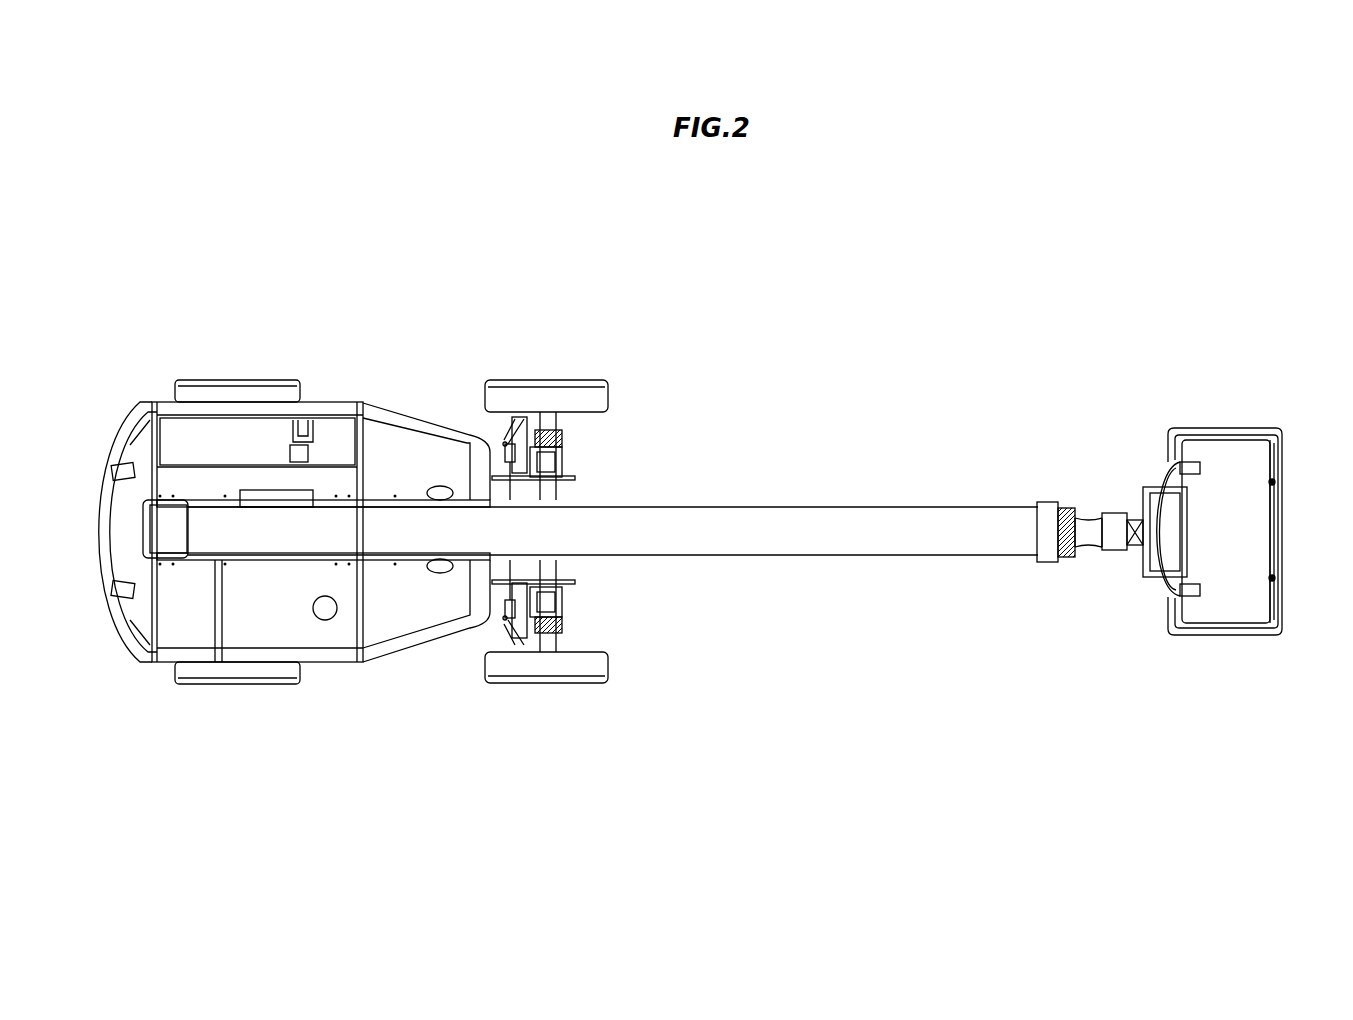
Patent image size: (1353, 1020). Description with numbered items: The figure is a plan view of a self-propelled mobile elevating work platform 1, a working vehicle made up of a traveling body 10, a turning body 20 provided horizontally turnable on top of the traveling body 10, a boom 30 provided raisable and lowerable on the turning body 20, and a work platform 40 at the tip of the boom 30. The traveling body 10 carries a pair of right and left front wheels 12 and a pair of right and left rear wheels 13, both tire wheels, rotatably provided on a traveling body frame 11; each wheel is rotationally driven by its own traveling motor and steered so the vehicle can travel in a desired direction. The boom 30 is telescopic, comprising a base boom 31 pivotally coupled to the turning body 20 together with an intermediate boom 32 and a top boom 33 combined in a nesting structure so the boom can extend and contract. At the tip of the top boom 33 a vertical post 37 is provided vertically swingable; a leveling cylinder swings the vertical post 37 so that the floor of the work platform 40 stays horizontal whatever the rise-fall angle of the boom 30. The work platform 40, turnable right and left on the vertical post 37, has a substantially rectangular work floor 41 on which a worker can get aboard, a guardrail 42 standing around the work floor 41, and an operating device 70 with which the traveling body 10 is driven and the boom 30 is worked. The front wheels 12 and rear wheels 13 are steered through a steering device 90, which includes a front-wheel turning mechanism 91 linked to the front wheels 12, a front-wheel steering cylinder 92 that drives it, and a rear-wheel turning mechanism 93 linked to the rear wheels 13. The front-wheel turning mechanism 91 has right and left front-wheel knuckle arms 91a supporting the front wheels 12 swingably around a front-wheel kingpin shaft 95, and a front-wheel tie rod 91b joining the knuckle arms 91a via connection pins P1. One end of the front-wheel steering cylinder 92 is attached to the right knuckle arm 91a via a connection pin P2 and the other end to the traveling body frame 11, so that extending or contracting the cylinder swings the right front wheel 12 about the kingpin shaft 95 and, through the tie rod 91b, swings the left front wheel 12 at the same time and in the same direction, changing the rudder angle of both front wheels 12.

The mobile elevating work platform 1 is at (754, 329).
The traveling body 10 is at (620, 684).
The traveling body frame 11 is at (576, 498).
The front wheels 12 is at (550, 381).
The rear wheels 13 is at (240, 380).
The turning body 20 is at (127, 403).
The boom 30 is at (826, 505).
The base boom 31 is at (922, 506).
The intermediate boom 32 is at (1060, 506).
The top boom 33 is at (1093, 535).
The vertical post 37 is at (1117, 513).
The work platform 40 is at (1263, 422).
The work floor 41 is at (1250, 551).
The guardrail 42 is at (1281, 598).
The operating device 70 is at (1172, 498).
The steering device 90 is at (442, 302).
The front-wheel turning mechanism 91 is at (503, 642).
The front-wheel knuckle arms 91a is at (506, 400).
The front-wheel tie rod 91b is at (504, 458).
The front-wheel steering cylinder 92 is at (562, 592).
The rear-wheel turning mechanism 93 is at (248, 432).
The front-wheel kingpin shaft 95 is at (565, 433).
The connection pins P1 is at (471, 396).
The connection pin P2 is at (494, 629).